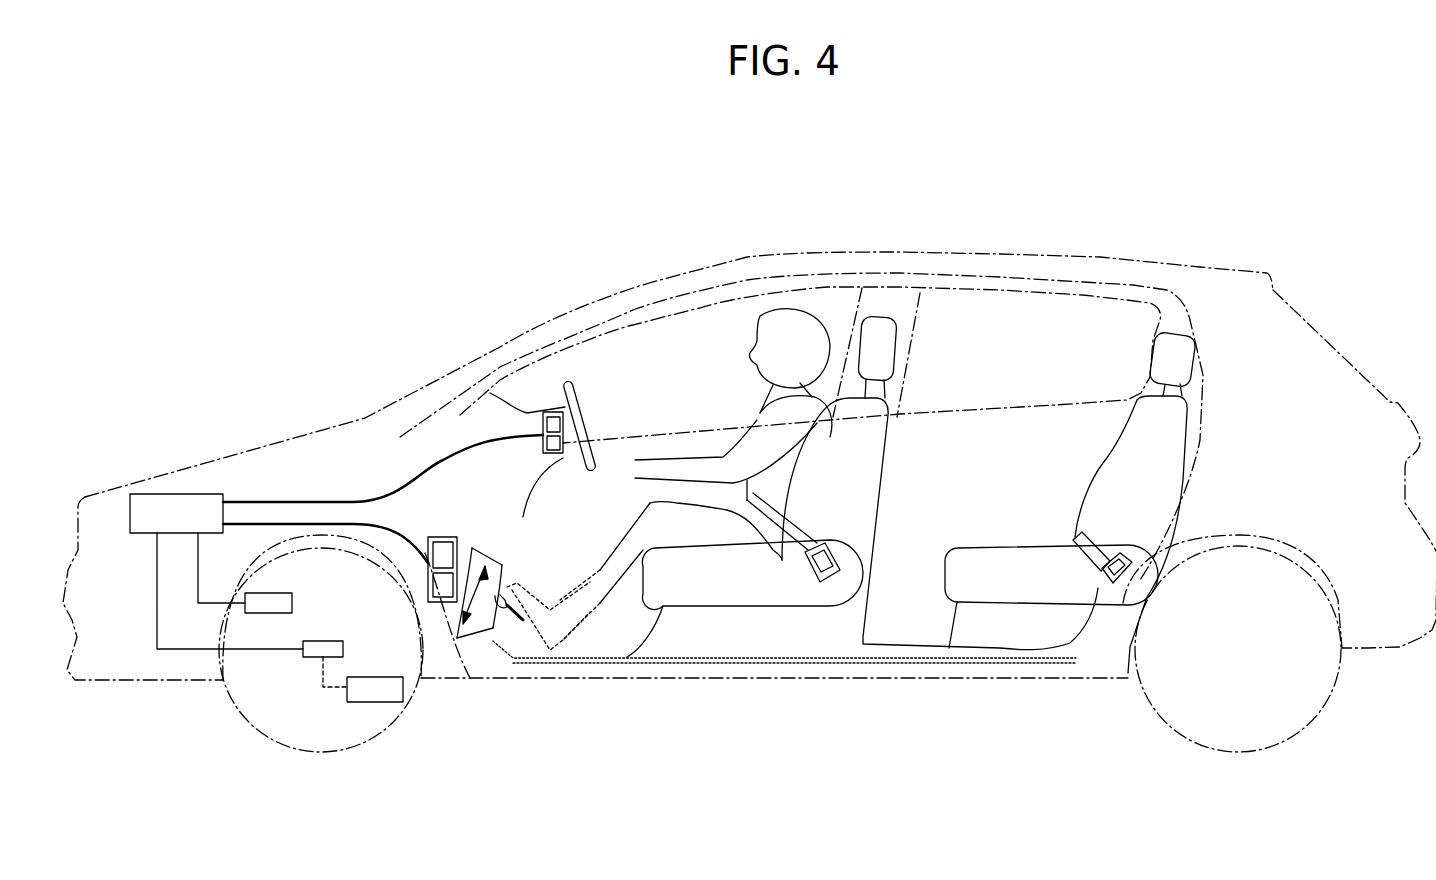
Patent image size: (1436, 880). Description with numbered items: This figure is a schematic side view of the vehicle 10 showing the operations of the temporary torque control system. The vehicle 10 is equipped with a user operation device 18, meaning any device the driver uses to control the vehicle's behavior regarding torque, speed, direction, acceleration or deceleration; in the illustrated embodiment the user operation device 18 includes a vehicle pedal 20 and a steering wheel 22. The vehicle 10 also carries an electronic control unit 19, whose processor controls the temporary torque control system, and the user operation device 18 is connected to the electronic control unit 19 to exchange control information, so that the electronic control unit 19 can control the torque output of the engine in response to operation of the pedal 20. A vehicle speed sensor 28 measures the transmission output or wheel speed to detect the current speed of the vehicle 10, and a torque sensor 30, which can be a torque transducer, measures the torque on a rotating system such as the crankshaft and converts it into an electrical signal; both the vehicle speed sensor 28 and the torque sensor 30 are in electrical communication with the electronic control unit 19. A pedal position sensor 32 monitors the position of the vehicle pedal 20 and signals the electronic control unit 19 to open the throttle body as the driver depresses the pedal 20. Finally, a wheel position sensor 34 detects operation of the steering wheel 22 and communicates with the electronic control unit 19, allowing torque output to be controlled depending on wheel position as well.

The vehicle 10 is at (1020, 177).
The user operation device 18 is at (440, 465).
The electronic control unit (ECU) 19 is at (175, 493).
The vehicle pedal 20 is at (507, 585).
The steering wheel 22 is at (555, 411).
The vehicle speed sensor 28 is at (278, 593).
The torque sensor 30 is at (380, 702).
The pedal position sensor 32 is at (440, 537).
The wheel position sensor 34 is at (546, 411).